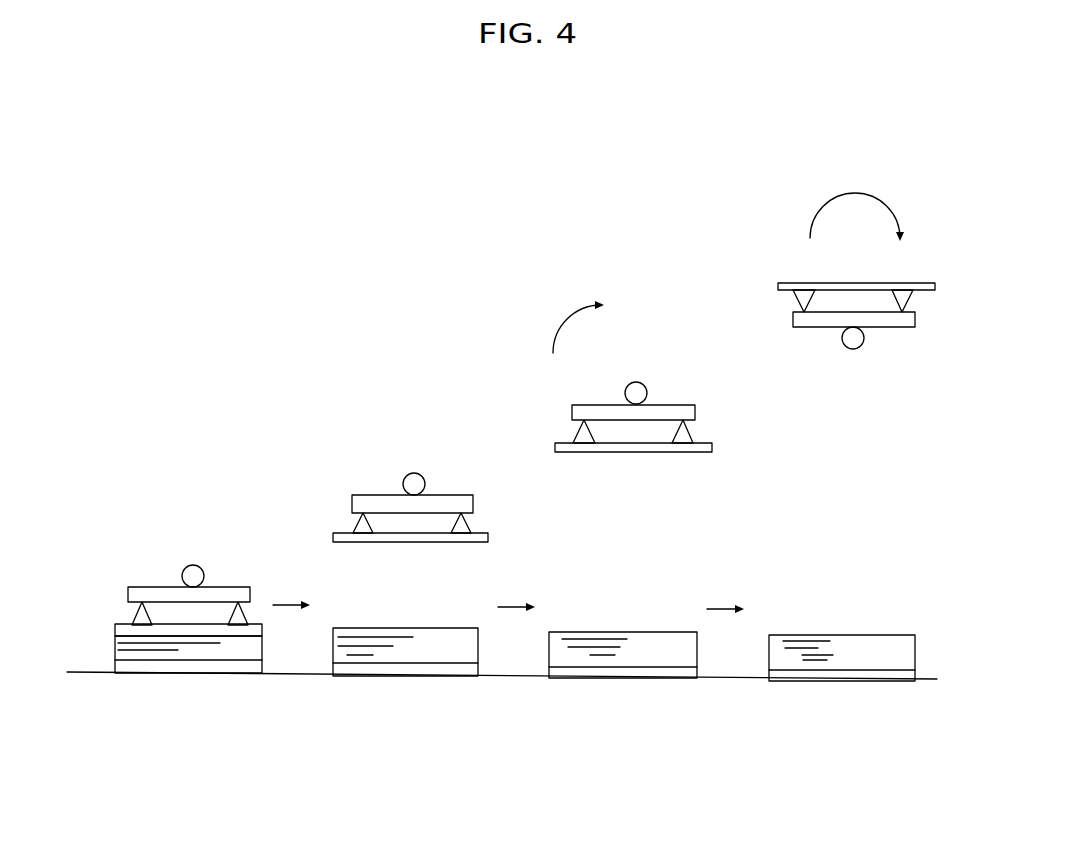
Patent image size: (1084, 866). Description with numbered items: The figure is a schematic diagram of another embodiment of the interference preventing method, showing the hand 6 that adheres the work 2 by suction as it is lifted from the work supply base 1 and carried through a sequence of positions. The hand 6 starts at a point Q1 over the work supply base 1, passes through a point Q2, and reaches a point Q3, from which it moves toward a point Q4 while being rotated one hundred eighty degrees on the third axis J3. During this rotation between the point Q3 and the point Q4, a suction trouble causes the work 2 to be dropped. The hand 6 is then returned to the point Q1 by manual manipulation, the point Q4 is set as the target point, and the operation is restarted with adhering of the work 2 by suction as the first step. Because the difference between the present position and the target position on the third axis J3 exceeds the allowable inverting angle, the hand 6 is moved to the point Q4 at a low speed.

The work supply base 1 is at (213, 668).
The work 2 is at (253, 631).
The hand 6 is at (215, 593).
The point Q1 is at (148, 570).
The point Q2 is at (363, 473).
The point Q3 is at (645, 467).
The point Q4 is at (882, 353).
The third axis J3 is at (638, 392).